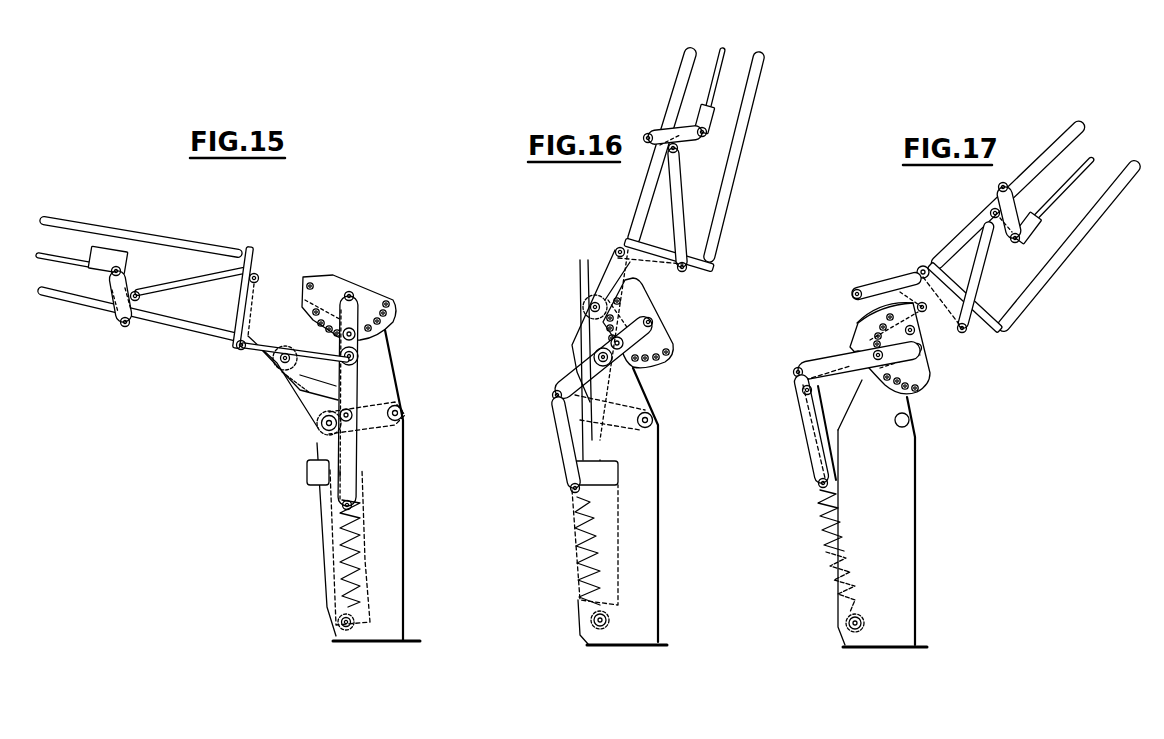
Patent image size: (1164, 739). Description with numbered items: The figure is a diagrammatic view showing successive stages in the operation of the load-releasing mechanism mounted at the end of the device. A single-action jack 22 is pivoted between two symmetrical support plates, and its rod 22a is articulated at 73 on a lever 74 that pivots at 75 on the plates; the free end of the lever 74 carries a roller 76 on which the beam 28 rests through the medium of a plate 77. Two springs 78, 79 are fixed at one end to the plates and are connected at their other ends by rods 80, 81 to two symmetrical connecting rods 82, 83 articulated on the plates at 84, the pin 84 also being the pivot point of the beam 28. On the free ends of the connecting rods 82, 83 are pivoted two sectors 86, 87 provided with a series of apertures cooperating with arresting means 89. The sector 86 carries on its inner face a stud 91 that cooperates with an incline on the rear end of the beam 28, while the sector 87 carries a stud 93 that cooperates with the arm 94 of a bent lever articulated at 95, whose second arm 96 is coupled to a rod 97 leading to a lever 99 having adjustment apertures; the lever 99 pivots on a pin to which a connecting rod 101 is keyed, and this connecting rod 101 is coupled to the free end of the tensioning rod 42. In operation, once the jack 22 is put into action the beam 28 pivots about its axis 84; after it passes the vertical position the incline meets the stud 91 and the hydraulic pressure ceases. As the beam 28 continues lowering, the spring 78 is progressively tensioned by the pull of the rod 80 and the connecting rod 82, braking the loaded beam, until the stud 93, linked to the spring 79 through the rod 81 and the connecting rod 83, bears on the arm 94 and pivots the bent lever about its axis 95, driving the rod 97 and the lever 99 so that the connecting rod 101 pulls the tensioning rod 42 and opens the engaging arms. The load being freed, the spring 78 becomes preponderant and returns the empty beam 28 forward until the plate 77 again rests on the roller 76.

In FIG. 15, the single-action jack 22 is at (326, 524).
In FIG. 16, the single-action jack 22 is at (605, 545).
In FIG. 17, the single-action jack 22 is at (882, 513).
In FIG. 15, the rod of the jack 22a is at (322, 462).
In FIG. 16, the rod of the jack 22a is at (595, 451).
In FIG. 15, the beam 28 is at (123, 222).
In FIG. 16, the beam 28 is at (748, 181).
In FIG. 17, the beam 28 is at (1068, 277).
In FIG. 15, the tensioning rod 42 is at (82, 267).
In FIG. 16, the tensioning rod 42 is at (718, 90).
In FIG. 17, the tensioning rod 42 is at (1057, 203).
In FIG. 15, the articulation 73 is at (323, 426).
In FIG. 15, the lever 74 is at (297, 403).
In FIG. 16, the lever 74 is at (583, 341).
In FIG. 15, the pivot 75 is at (404, 414).
In FIG. 16, the pivot 75 is at (654, 420).
In FIG. 15, the roller 76 is at (284, 362).
In FIG. 16, the roller 76 is at (590, 301).
In FIG. 15, the plate 77 is at (250, 349).
In FIG. 15, the spring 78 is at (336, 573).
In FIG. 16, the spring 78 is at (574, 516).
In FIG. 17, the spring 78 is at (820, 510).
In FIG. 17, the spring 79 is at (828, 540).
In FIG. 15, the rod 80 is at (340, 478).
In FIG. 16, the rod 80 is at (560, 447).
In FIG. 17, the rod 80 is at (818, 436).
In FIG. 17, the rod 81 is at (820, 476).
In FIG. 15, the connecting rod 82 is at (353, 305).
In FIG. 16, the connecting rod 82 is at (568, 382).
In FIG. 17, the connecting rod 82 is at (858, 360).
In FIG. 17, the connecting rod 83 is at (818, 385).
In FIG. 15, the pin 84 is at (358, 356).
In FIG. 16, the pin 84 is at (603, 357).
In FIG. 17, the pin 84 is at (858, 360).
In FIG. 15, the sector 86 is at (330, 292).
In FIG. 16, the sector 86 is at (657, 338).
In FIG. 17, the sector 86 is at (937, 371).
In FIG. 17, the sector 87 is at (866, 318).
In FIG. 15, the arresting means 89 is at (355, 334).
In FIG. 16, the stud 91 is at (648, 287).
In FIG. 17, the stud 93 is at (900, 290).
In FIG. 17, the arm of the bent lever 94 is at (862, 290).
In FIG. 17, the articulation of the bent lever 95 is at (920, 268).
In FIG. 17, the second arm of the bent lever 96 is at (985, 325).
In FIG. 16, the rod 97 is at (684, 222).
In FIG. 17, the rod 97 is at (980, 276).
In FIG. 17, the lever having adjustment apertures 99 is at (1000, 198).
In FIG. 17, the connecting rod 101 is at (1010, 224).